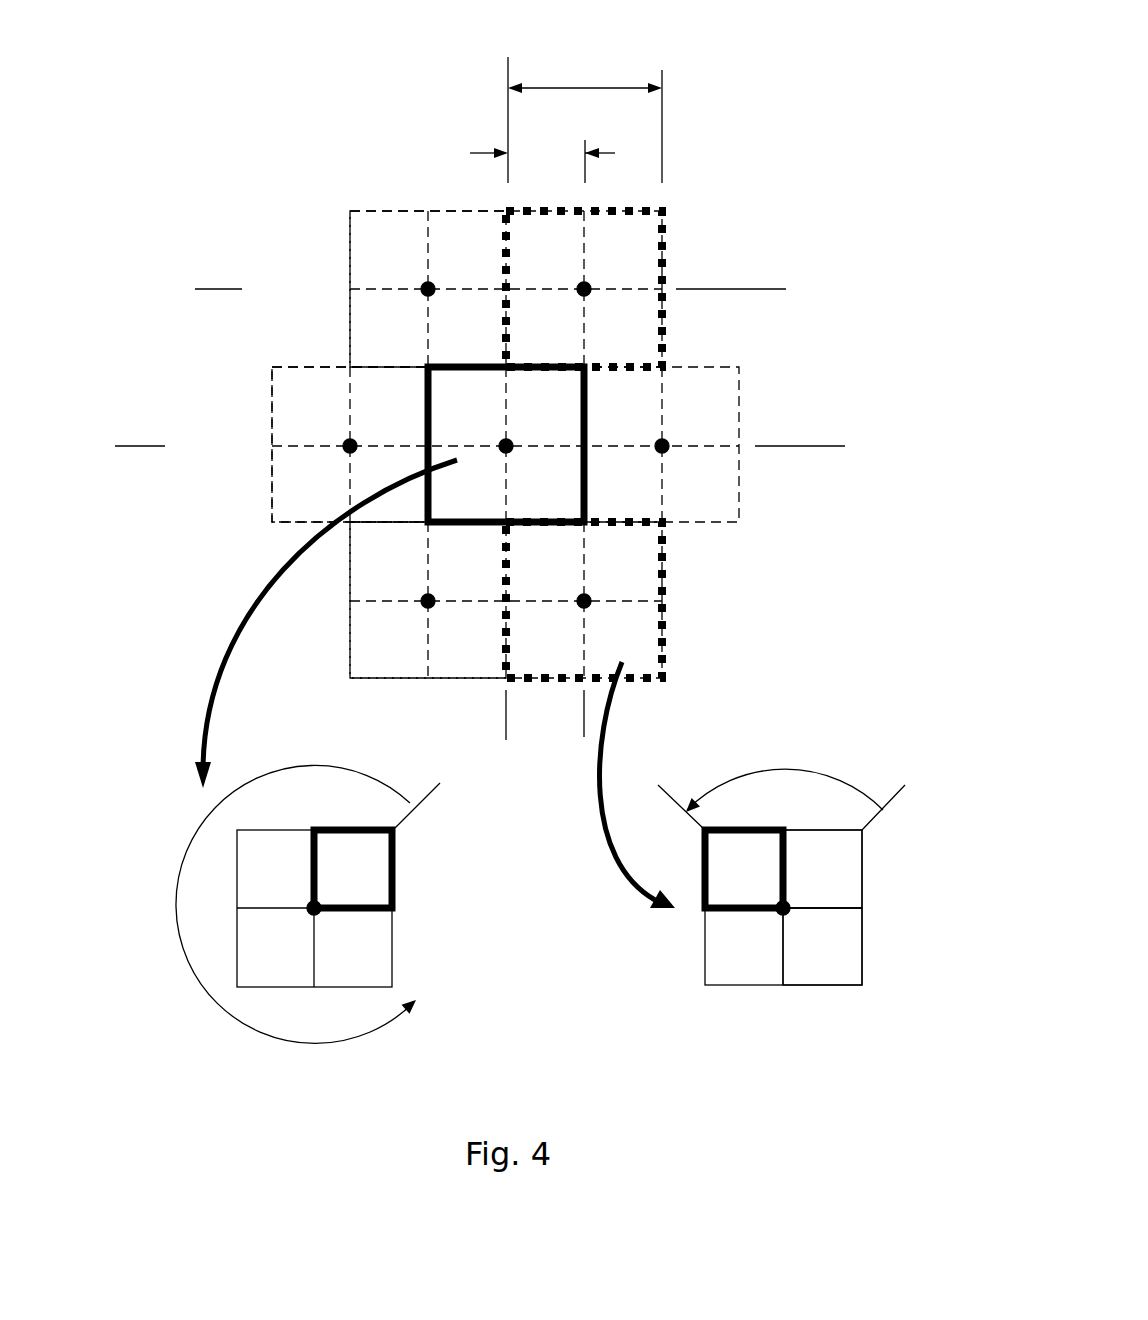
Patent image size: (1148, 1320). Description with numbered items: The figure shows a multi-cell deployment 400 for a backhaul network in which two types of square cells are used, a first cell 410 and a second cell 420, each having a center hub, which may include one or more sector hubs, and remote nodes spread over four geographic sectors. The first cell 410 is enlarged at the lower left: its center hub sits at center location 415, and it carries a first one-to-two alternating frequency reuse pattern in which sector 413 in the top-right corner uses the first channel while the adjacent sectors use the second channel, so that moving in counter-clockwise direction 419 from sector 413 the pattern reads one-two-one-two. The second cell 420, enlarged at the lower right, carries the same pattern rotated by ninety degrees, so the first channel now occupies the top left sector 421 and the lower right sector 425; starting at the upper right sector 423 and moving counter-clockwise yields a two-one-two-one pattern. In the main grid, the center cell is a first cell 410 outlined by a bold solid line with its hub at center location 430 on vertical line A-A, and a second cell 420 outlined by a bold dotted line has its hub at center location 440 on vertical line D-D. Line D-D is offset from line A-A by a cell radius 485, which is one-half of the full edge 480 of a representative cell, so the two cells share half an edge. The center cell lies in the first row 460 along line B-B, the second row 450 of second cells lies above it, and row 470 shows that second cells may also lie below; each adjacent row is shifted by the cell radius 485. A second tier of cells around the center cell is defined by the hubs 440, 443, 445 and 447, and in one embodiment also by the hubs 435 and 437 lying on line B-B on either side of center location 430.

The multi-cell deployment 400 is at (320, 182).
The first cell 410 is at (250, 998).
The sector 413 is at (395, 877).
The center location 415 is at (310, 905).
The counter-clockwise direction 419 is at (297, 1045).
The second cell 420 is at (735, 1002).
The top left sector 421 is at (705, 873).
The upper right sector 423 is at (862, 880).
The lower right sector 425 is at (813, 985).
The center location 430 is at (506, 446).
The hub 435 is at (350, 446).
The hub 437 is at (662, 448).
The center location 440 is at (584, 290).
The hub 443 is at (428, 289).
The hub 445 is at (584, 601).
The hub 447 is at (437, 607).
The second row 450 is at (336, 212).
The first row 460 is at (256, 375).
The row 470 is at (678, 538).
The full edge 480 is at (616, 88).
The cell radius 485 is at (472, 152).